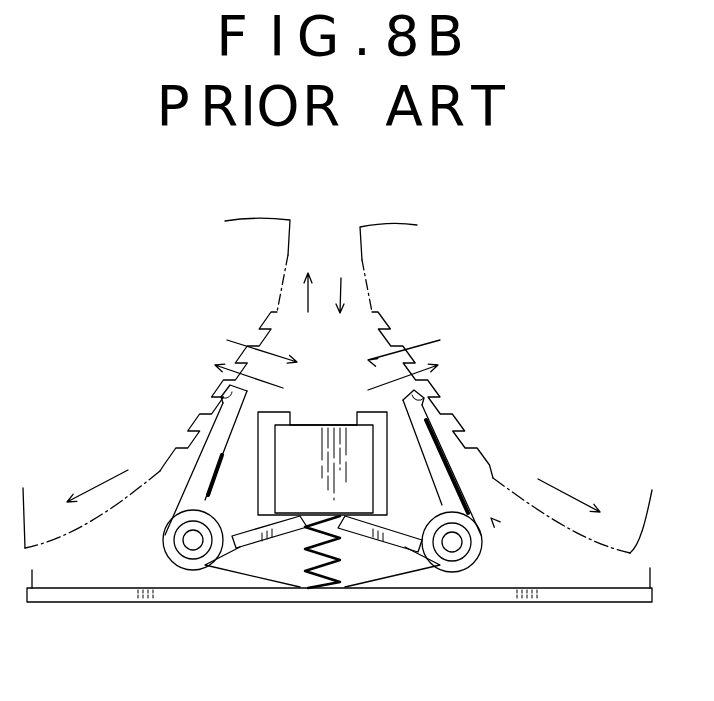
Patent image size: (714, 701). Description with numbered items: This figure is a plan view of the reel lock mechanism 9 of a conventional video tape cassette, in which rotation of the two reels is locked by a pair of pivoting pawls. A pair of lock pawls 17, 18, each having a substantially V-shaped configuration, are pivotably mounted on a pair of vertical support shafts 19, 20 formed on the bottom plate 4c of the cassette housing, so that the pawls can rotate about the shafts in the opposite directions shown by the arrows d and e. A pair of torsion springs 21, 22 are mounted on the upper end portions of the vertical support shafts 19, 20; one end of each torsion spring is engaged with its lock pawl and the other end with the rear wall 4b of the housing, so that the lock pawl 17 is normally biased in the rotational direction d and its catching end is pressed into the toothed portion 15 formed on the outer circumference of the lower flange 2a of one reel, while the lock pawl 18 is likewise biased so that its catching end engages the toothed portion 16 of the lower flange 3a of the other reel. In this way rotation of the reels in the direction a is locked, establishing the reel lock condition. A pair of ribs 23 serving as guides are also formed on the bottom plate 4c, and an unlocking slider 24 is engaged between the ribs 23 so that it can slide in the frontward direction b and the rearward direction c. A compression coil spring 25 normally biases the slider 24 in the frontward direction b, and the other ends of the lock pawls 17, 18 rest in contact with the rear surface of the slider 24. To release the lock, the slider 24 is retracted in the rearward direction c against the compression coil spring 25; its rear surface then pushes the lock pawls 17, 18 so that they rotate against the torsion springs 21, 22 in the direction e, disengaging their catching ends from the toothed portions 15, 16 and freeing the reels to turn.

The lower flange 2a is at (255, 243).
The lower flange 3a is at (390, 247).
The frontward direction b is at (309, 300).
The rearward direction c is at (341, 280).
The rotational direction d is at (240, 365).
The rotational direction e is at (240, 340).
The reel rotation direction a is at (100, 481).
The toothed portion 15 is at (222, 407).
The toothed portion 16 is at (428, 412).
The lock pawl 17 is at (197, 462).
The lock pawl 18 is at (433, 457).
The vertical support shaft 19 is at (193, 542).
The vertical support shaft 20 is at (453, 545).
The torsion spring 21 is at (172, 552).
The torsion spring 22 is at (478, 562).
The ribs 23 is at (256, 488).
The unlocking slider 24 is at (327, 425).
The compression coil spring 25 is at (320, 582).
The reel lock mechanism 9 is at (491, 518).
The rear wall 4b is at (223, 604).
The bottom plate 4c is at (366, 560).